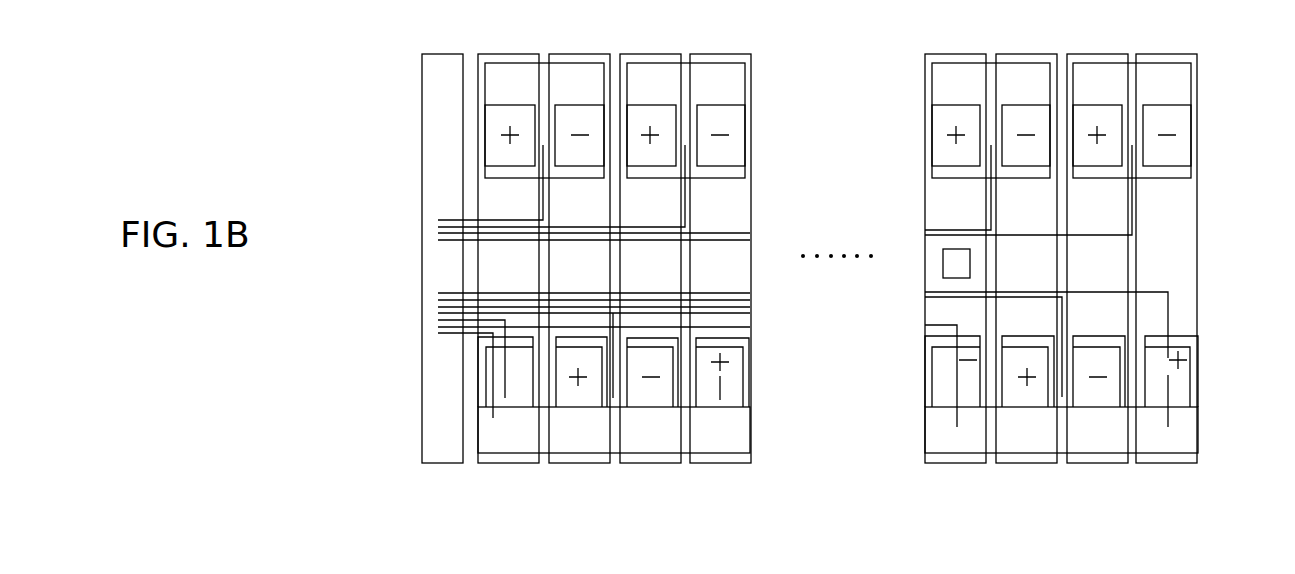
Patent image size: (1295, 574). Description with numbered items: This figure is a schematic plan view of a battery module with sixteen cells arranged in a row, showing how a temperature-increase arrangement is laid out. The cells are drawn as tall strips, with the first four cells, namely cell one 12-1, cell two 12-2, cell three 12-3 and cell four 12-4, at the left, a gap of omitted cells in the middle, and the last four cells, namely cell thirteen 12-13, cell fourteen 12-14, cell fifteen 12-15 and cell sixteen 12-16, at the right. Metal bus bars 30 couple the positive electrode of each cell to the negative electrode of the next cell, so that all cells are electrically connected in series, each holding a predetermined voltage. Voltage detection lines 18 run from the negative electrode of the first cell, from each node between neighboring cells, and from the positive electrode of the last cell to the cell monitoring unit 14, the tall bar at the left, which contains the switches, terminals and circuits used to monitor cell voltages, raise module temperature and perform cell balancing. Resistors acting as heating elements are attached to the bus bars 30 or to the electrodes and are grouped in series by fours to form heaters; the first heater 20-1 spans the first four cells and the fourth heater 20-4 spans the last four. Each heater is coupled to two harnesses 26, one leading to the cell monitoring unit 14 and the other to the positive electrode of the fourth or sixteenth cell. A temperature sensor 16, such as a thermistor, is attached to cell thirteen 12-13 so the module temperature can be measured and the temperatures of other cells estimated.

The cell monitoring unit 14 is at (440, 137).
The voltage detection lines 18 is at (455, 218).
The harnesses 26 is at (491, 382).
The bus bars 30 is at (505, 74).
The temperature sensor 16 is at (958, 260).
The cell 1 12-1 is at (490, 463).
The cell 2 12-2 is at (590, 463).
The cell 3 12-3 is at (657, 463).
The cell 4 12-4 is at (745, 463).
The cell 13 12-13 is at (965, 465).
The cell 14 12-14 is at (1035, 465).
The cell 15 12-15 is at (1097, 465).
The cell 16 12-16 is at (1168, 465).
The heater 1 20-1 is at (540, 440).
The heater 4 20-4 is at (1130, 432).